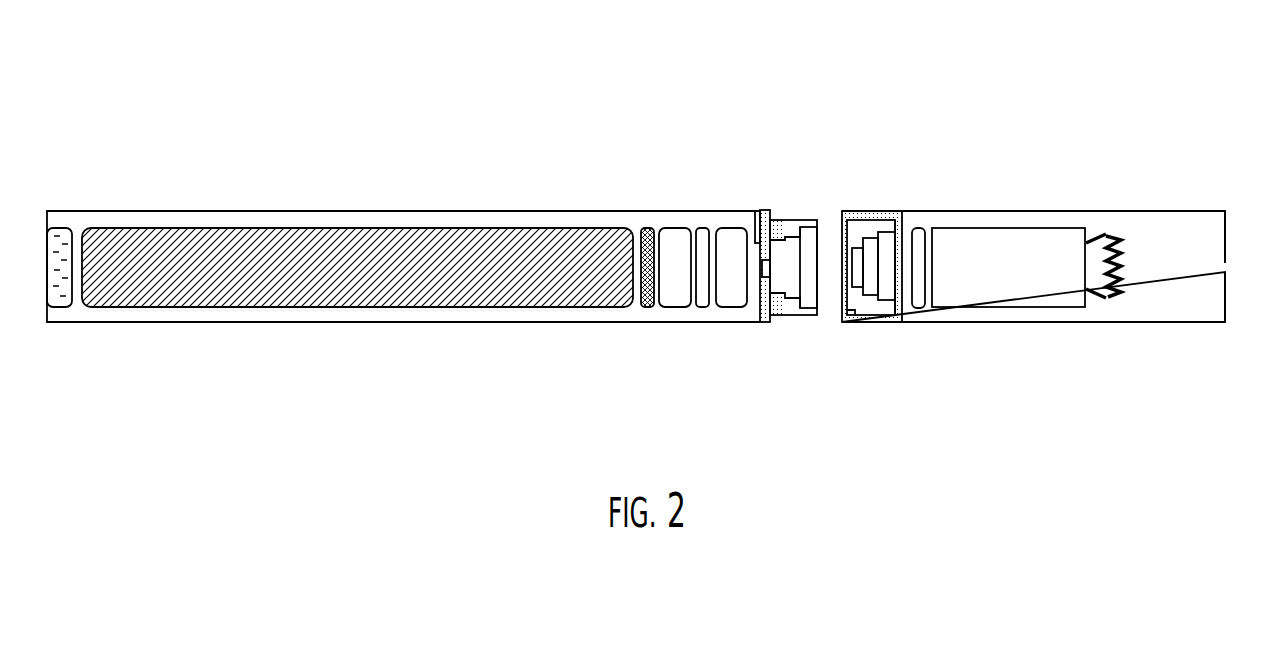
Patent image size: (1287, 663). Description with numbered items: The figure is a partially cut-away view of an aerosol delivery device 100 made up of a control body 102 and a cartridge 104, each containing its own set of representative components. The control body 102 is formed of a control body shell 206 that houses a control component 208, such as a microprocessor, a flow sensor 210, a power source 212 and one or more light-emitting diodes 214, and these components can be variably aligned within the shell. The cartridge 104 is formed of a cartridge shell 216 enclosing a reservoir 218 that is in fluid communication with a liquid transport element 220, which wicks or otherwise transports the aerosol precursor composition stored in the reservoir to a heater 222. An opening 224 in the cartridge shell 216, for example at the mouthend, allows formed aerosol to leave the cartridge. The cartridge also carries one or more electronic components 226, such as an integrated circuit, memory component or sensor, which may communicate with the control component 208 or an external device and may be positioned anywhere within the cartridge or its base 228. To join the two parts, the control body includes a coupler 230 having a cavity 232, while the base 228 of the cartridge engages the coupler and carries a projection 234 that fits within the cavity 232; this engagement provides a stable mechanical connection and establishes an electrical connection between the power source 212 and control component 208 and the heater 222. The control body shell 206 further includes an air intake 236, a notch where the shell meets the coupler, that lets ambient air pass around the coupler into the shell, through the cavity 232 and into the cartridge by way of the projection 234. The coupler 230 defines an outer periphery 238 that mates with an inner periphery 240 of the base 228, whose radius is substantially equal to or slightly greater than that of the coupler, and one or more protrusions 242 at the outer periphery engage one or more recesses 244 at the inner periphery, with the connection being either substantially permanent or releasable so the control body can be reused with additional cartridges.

The aerosol delivery device 100 is at (533, 53).
The control body 102 is at (122, 173).
The cartridge 104 is at (1048, 180).
The control body shell 206 is at (183, 323).
The control component 208 is at (677, 307).
The flow sensor 210 is at (733, 307).
The power source 212 is at (327, 306).
The light-emitting diodes 214 is at (58, 308).
The cartridge shell 216 is at (992, 325).
The reservoir 218 is at (1030, 308).
The liquid transport element 220 is at (1102, 302).
The heater 222 is at (1113, 298).
The opening 224 is at (1223, 262).
The electronic components 226 is at (917, 308).
The base 228 is at (895, 322).
The coupler 230 is at (797, 315).
The cavity 232 is at (790, 223).
The projection 234 is at (868, 232).
The air intake 236 is at (757, 227).
The outer periphery 238 is at (798, 226).
The inner periphery 240 is at (862, 227).
The protrusions 242 is at (778, 320).
The recesses 244 is at (858, 323).